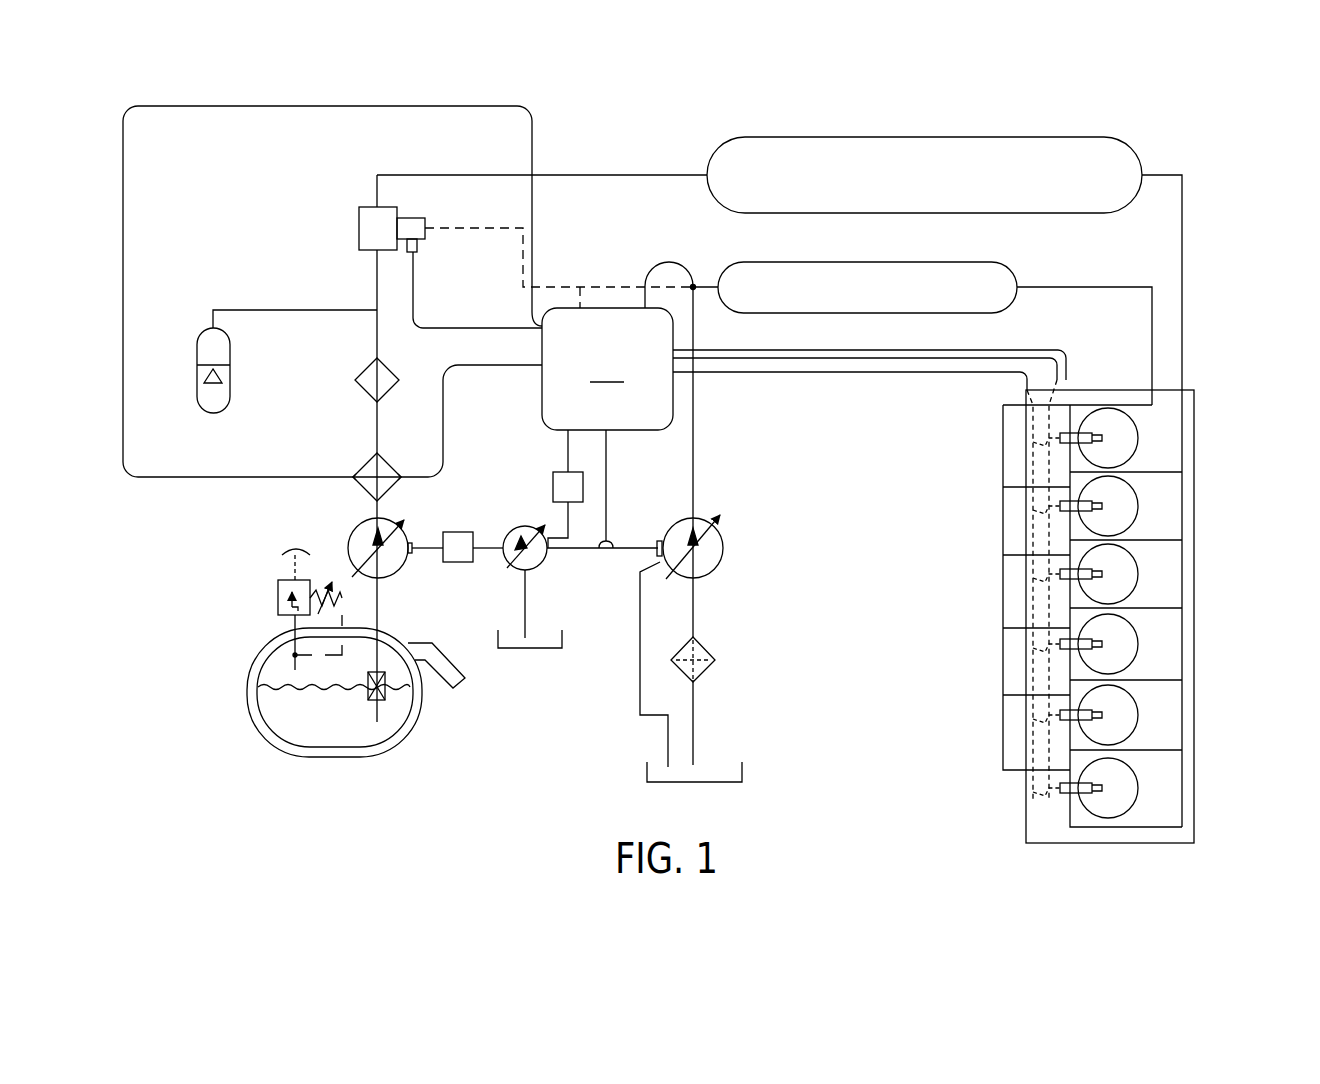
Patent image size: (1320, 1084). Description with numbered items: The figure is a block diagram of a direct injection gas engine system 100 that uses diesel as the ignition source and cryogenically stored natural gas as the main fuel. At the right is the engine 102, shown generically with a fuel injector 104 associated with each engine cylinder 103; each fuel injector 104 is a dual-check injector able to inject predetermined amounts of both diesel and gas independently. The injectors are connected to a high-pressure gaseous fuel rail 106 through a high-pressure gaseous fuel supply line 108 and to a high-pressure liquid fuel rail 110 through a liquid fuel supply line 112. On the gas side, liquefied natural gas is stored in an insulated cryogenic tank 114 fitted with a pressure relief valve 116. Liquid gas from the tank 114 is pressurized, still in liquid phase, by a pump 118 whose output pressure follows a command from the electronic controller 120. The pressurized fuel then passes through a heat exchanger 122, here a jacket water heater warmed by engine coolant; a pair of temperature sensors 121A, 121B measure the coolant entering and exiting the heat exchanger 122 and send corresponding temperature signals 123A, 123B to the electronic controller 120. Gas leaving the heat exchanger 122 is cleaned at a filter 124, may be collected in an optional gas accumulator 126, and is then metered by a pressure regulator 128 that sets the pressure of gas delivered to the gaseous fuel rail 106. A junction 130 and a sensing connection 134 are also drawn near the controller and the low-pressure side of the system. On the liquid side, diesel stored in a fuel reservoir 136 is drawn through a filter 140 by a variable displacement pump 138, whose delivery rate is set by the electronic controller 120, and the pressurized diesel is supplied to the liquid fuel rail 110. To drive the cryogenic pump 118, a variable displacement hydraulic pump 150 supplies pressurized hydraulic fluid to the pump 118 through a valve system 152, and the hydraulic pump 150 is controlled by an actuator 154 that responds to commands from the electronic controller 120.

The engine system 100 is at (1292, 119).
The engine 102 is at (1145, 843).
The engine cylinder 103 is at (1115, 783).
The fuel injector 104 is at (1063, 797).
The high-pressure gaseous fuel rail 106 is at (1128, 150).
The high-pressure gaseous fuel supply line 108 is at (1183, 230).
The high-pressure liquid fuel rail 110 is at (1018, 272).
The liquid fuel supply line 112 is at (1087, 287).
The tank 114 is at (320, 757).
The pressure relief valve 116 is at (263, 589).
The pump 118 is at (392, 575).
The electronic controller 120 is at (804, 554).
The temperature sensor 121A is at (403, 478).
The temperature sensor 121B is at (352, 478).
The heat exchanger 122 is at (372, 457).
The temperature signal 123A is at (440, 440).
The temperature signal 123B is at (160, 477).
The filter 124 is at (357, 380).
The gas accumulator 126 is at (198, 340).
The pressure regulator 128 is at (359, 228).
The junction 130 is at (694, 286).
The pressure sensor line 134 is at (590, 285).
The fuel reservoir 136 is at (705, 780).
The variable displacement pump 138 is at (724, 552).
The filter 140 is at (712, 652).
The hydraulic pump 150 is at (542, 568).
The valve system 152 is at (457, 565).
The actuator 154 is at (555, 472).